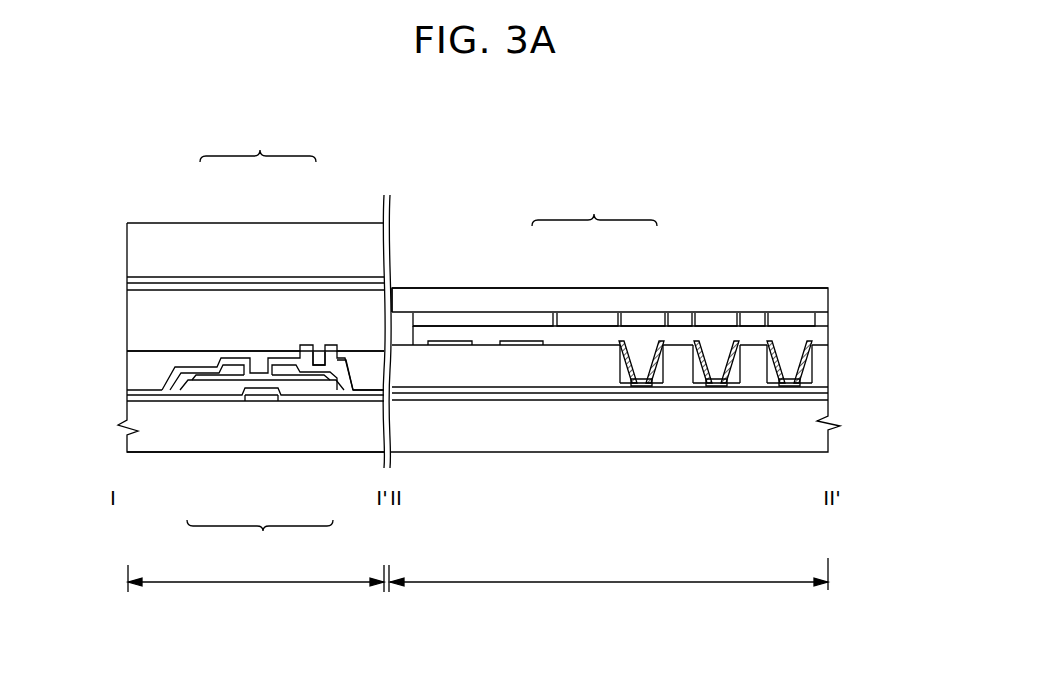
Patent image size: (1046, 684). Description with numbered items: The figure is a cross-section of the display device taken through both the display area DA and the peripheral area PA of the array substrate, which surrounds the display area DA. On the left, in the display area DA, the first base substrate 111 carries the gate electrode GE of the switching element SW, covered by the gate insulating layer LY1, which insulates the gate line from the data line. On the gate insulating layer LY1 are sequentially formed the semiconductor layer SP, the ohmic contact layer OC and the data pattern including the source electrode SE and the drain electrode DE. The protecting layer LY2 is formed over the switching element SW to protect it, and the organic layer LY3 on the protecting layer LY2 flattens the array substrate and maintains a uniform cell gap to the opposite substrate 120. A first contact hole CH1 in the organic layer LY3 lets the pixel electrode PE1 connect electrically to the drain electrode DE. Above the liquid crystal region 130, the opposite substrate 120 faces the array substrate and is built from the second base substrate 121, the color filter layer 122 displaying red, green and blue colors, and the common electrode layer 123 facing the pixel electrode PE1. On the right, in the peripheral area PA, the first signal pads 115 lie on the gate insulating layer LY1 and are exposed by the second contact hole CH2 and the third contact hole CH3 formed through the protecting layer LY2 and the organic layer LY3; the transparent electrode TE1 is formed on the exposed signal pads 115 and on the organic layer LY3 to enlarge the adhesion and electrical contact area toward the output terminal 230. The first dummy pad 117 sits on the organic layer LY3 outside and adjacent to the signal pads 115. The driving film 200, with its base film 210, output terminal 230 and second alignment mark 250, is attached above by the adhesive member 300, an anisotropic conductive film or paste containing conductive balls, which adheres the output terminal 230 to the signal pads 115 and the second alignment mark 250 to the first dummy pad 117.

The opposite substrate 120 is at (258, 146).
The second base substrate 121 is at (221, 246).
The color filter layer 122 is at (261, 281).
The common electrode layer 123 is at (304, 288).
The liquid crystal layer 130 is at (128, 320).
The first base substrate 111 is at (128, 445).
The gate insulating layer LY1 is at (128, 401).
The protecting layer LY2 is at (128, 390).
The organic layer LY3 is at (128, 362).
The first contact hole CH1 is at (319, 346).
The second contact hole CH2 is at (646, 350).
The third contact hole CH3 is at (721, 350).
The switching element SW is at (260, 536).
The source electrode SE is at (200, 378).
The semiconductor layer SP is at (214, 390).
The gate electrode GE is at (258, 401).
The ohmic contact layer OC is at (290, 380).
The drain electrode DE is at (317, 378).
The pixel electrode PE1 is at (355, 352).
The driving film 200 is at (594, 211).
The base film 210 is at (596, 292).
The second alignment mark 250 is at (532, 318).
The output terminal 230 is at (629, 318).
The adhesive member 300 is at (480, 337).
The first dummy pad 117 is at (520, 345).
The first signal pad 115 is at (643, 387).
The transparent electrode TE1 is at (788, 387).
The display area DA is at (258, 591).
The peripheral area PA is at (609, 587).